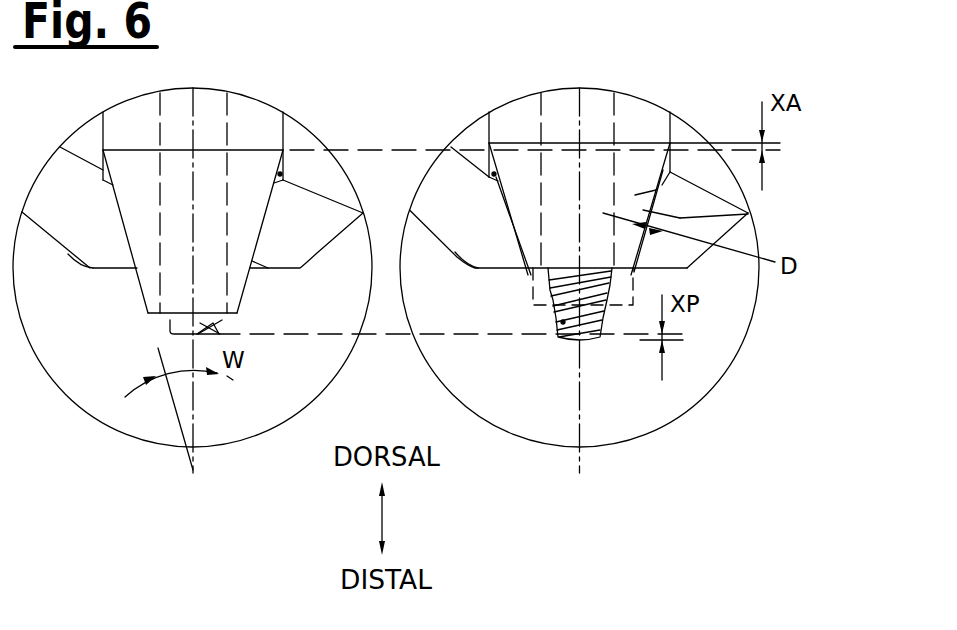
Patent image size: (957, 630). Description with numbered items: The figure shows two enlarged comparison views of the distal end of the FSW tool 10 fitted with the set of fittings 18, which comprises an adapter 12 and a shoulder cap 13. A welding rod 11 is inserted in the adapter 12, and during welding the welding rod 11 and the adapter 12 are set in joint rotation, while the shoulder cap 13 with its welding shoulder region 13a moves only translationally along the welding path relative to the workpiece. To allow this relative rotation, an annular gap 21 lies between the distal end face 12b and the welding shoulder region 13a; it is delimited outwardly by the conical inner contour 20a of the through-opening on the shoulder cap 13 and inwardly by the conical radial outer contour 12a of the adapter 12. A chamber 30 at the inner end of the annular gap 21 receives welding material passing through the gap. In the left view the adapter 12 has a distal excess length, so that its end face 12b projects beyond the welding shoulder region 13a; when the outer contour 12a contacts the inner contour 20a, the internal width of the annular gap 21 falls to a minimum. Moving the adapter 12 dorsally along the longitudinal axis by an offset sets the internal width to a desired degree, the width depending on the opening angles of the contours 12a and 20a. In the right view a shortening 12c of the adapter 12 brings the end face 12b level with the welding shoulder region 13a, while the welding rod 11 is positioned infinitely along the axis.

The FSW tool 10 is at (386, 237).
The set of fittings 18 is at (386, 237).
The welding rod 11 is at (563, 322).
The adapter 12 is at (522, 118).
The radial outer contour 12a is at (143, 297).
The distal end face 12b is at (155, 318).
The shortening 12c is at (533, 285).
The shoulder cap 13 is at (472, 138).
The welding shoulder region 13a is at (112, 272).
The inner contour 20a is at (748, 213).
The annular gap 21 is at (643, 238).
The chamber 30 is at (494, 174).